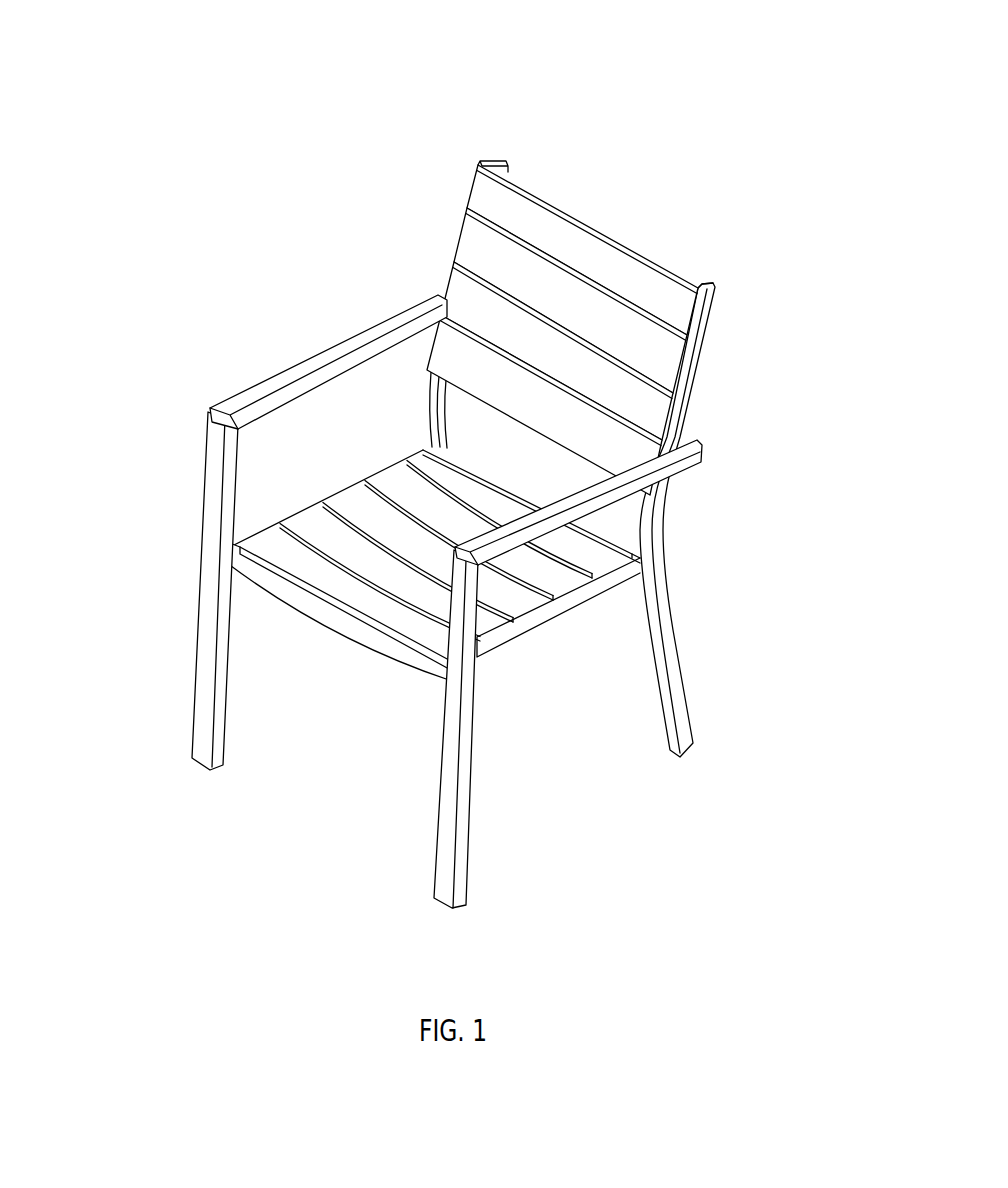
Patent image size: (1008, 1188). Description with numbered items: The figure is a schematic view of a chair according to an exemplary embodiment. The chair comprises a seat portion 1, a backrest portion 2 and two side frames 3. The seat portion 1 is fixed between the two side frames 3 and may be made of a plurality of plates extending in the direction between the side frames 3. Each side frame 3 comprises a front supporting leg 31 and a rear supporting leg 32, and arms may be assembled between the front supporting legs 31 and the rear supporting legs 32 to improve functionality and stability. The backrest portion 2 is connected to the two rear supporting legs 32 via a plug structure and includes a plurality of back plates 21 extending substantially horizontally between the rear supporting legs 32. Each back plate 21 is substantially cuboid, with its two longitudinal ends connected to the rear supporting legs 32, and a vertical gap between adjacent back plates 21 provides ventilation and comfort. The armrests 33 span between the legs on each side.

The seat portion 1 is at (433, 694).
The backrest portion 2 is at (543, 385).
The back plate 21 is at (471, 276).
The side frame 3 is at (444, 606).
The front supporting leg 31 is at (317, 702).
The rear supporting leg 32 is at (636, 385).
The armrest 33 is at (444, 461).